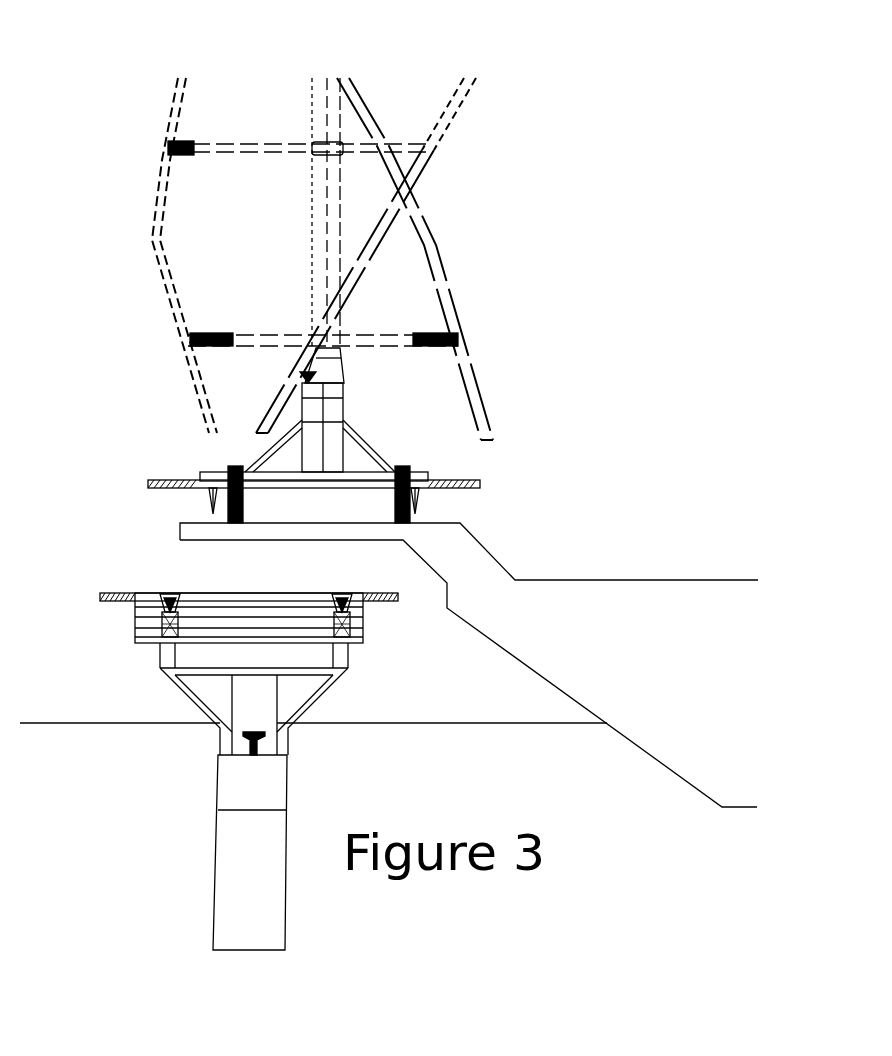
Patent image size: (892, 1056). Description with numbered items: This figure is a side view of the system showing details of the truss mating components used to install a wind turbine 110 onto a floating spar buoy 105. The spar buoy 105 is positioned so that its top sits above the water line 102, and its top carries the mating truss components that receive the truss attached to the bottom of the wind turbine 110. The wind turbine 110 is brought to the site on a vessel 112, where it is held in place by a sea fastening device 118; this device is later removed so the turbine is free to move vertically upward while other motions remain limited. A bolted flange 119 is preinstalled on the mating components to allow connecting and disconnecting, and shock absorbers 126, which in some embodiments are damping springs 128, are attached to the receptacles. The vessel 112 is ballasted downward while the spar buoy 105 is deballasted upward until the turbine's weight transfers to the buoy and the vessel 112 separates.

The wind turbine 110 is at (348, 259).
The sea fastening device 118 is at (402, 455).
The bolted flange 119 is at (156, 462).
The vessel 112 is at (469, 665).
The shock absorbers 126 is at (176, 582).
The damping springs 128 is at (370, 625).
The water line 102 is at (313, 749).
The spar buoy 105 is at (213, 852).